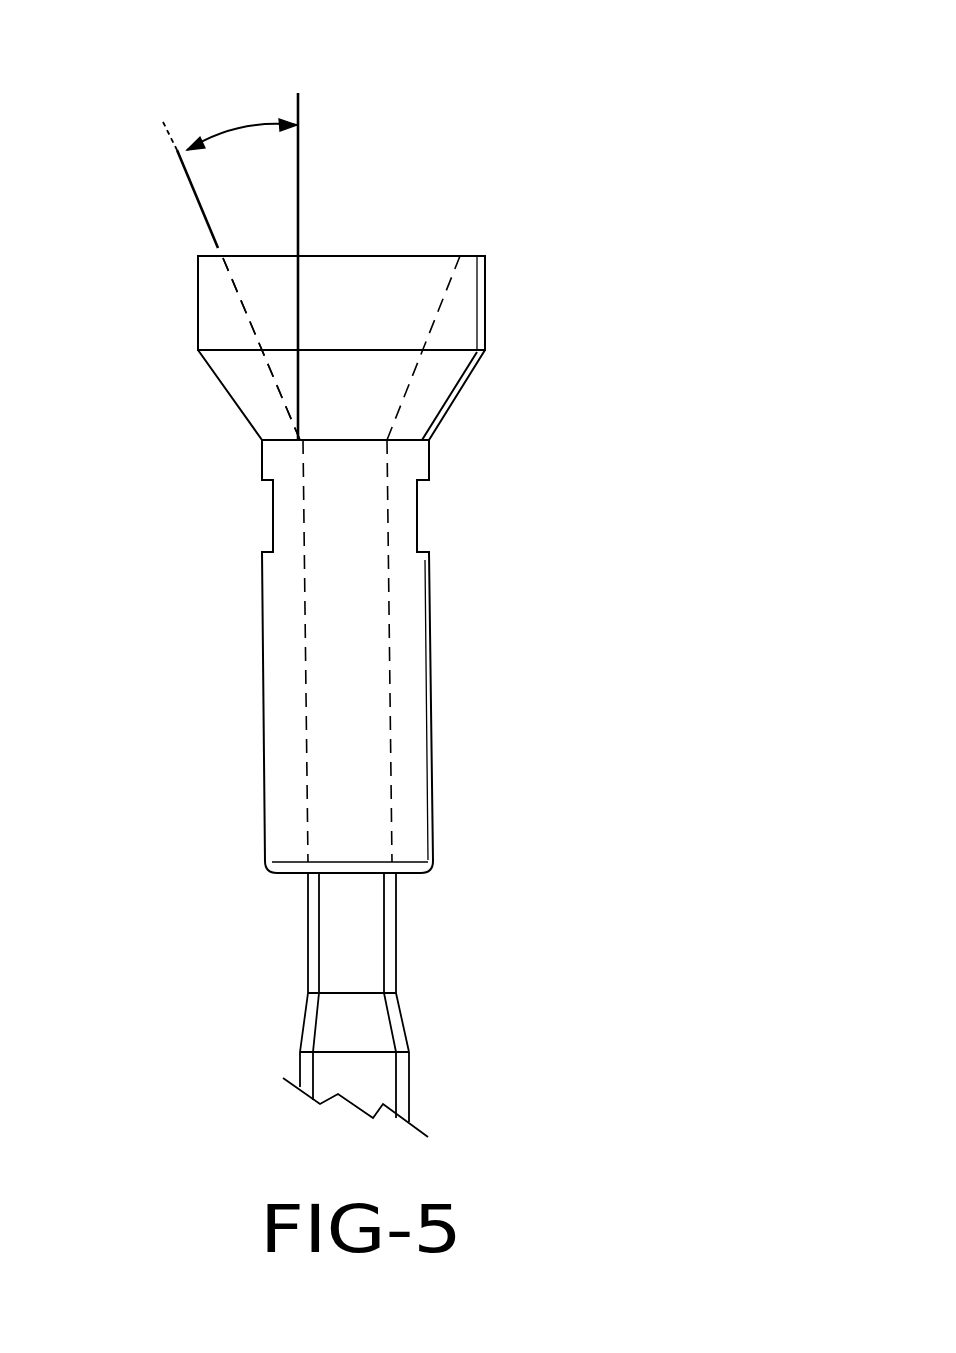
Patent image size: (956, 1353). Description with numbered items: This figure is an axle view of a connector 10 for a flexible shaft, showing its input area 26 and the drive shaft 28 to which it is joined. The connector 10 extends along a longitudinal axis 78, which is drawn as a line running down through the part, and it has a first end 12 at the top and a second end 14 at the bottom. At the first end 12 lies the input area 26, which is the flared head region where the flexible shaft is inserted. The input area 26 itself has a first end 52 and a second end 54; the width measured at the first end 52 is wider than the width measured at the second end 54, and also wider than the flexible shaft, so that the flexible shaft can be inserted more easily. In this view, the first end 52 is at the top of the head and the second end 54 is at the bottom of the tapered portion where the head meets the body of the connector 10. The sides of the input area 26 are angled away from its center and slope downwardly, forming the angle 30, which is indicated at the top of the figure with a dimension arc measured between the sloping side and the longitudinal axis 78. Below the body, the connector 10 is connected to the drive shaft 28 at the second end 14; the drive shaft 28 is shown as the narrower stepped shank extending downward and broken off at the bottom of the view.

The connector 10 is at (436, 621).
The first end 12 is at (487, 250).
The second end 14 is at (430, 870).
The input area 26 is at (405, 253).
The drive shaft 28 is at (380, 1003).
The angle 30 is at (235, 130).
The first end 52 is at (223, 260).
The second end 54 is at (307, 441).
The longitudinal axis 78 is at (300, 105).